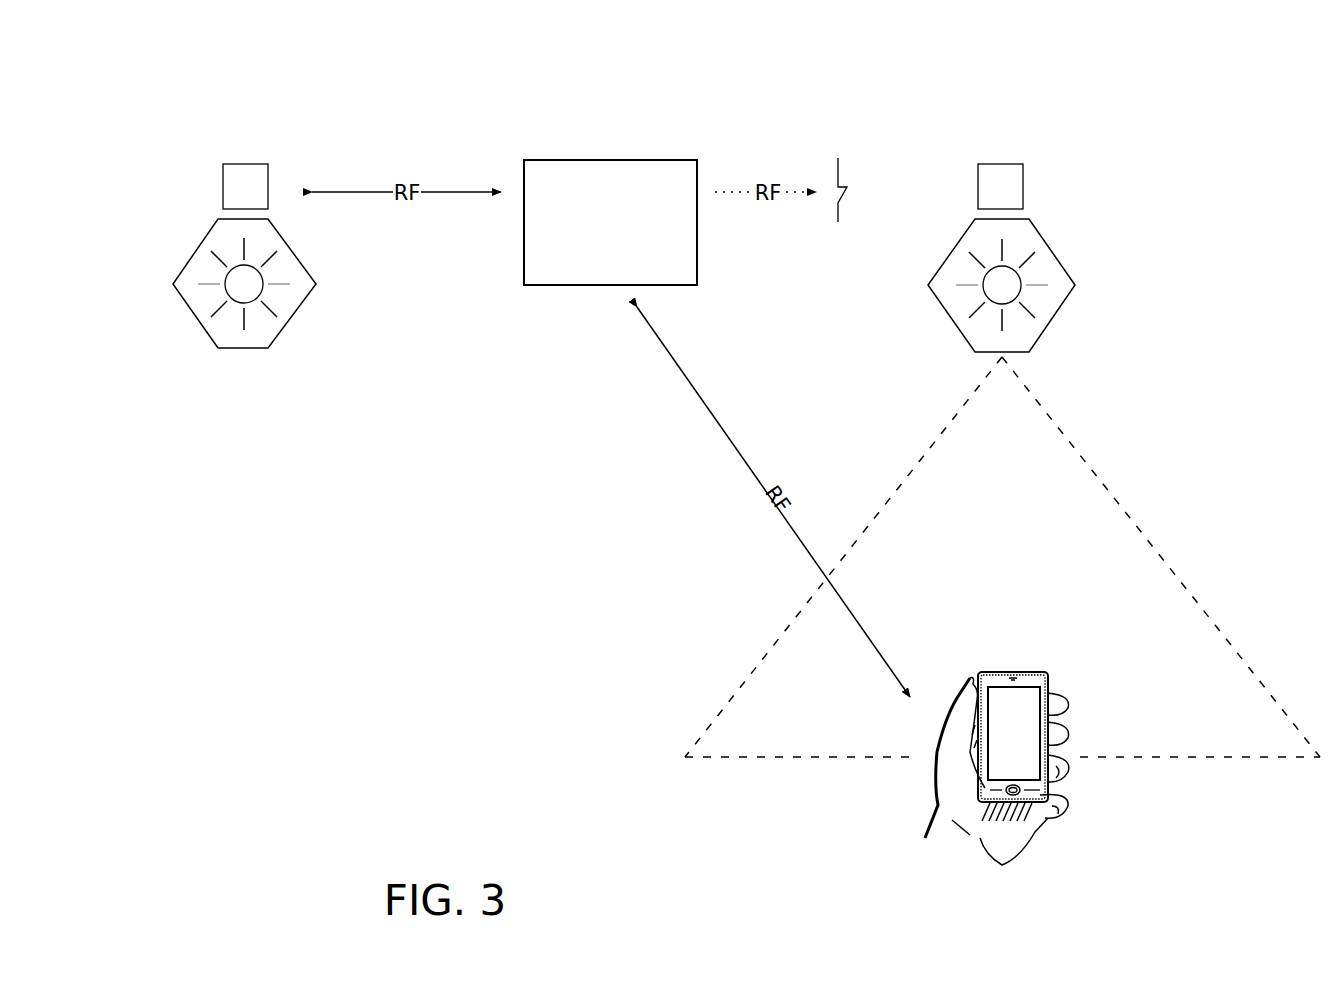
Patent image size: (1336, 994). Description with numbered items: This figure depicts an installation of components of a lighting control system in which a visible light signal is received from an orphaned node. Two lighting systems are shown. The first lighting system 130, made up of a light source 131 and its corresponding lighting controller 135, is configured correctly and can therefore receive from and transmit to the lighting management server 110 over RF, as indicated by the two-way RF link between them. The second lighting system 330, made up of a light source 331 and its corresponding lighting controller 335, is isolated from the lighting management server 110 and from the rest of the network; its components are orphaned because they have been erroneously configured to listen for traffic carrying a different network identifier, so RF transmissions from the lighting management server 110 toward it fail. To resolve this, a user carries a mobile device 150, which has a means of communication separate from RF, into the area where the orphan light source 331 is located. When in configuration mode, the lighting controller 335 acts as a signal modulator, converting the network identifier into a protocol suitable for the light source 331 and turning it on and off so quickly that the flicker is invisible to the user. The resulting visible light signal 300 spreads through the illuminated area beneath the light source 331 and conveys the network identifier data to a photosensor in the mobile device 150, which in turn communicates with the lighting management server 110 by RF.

The lighting management server 110 is at (648, 147).
The lighting system 130 is at (222, 70).
The light source 131 is at (167, 285).
The lighting controller 135 is at (214, 183).
The mobile device 150 is at (905, 842).
The visible light signal 300 is at (1105, 462).
The lighting system 330 is at (1033, 80).
The light source 331 is at (1083, 288).
The lighting controller 335 is at (1029, 182).